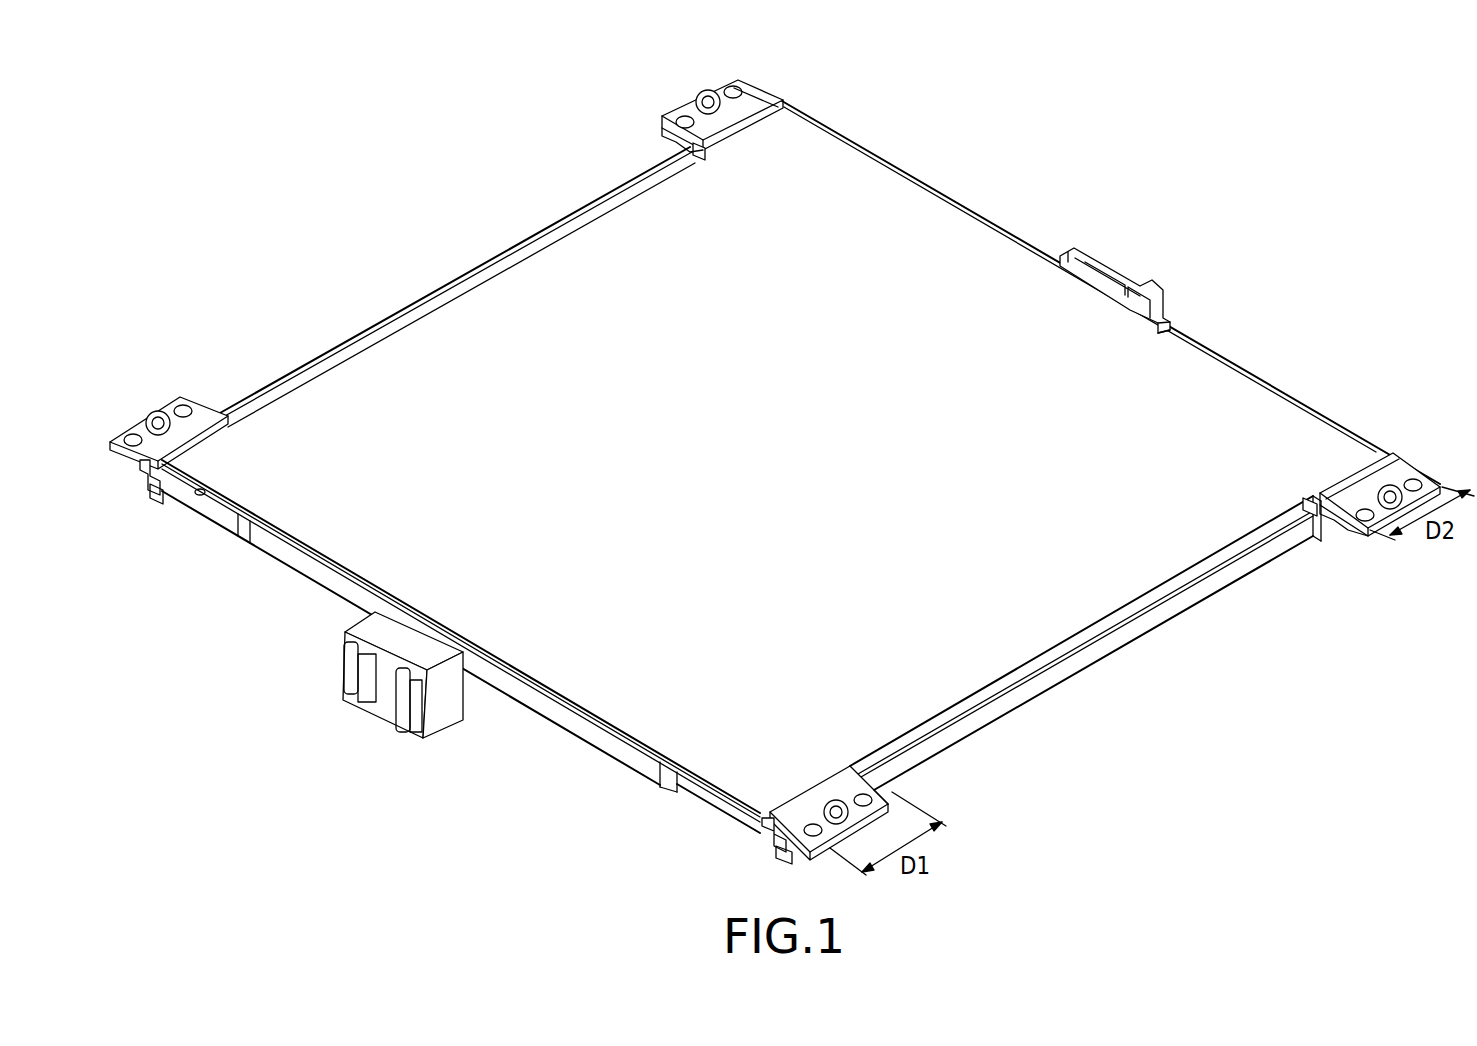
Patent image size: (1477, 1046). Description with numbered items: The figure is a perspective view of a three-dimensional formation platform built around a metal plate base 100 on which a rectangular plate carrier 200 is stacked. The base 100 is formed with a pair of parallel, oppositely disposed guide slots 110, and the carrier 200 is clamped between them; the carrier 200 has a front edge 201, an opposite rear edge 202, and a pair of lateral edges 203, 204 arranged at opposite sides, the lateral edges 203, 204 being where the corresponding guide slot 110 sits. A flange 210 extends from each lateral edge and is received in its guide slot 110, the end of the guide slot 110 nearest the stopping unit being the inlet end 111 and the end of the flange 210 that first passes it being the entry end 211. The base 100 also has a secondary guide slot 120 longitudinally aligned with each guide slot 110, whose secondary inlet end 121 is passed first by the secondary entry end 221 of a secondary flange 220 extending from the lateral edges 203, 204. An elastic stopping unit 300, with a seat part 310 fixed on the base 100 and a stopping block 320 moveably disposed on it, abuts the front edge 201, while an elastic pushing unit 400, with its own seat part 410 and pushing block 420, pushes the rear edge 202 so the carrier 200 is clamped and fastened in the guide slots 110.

The base 100 is at (1100, 666).
The guide slot 110 is at (217, 386).
The inlet end 111 is at (898, 772).
The secondary guide slot 120 is at (782, 89).
The secondary inlet end 121 is at (790, 103).
The carrier 200 is at (940, 215).
The front edge 201 is at (1292, 396).
The rear edge 202 is at (232, 525).
The lateral edge 203 is at (470, 288).
The lateral edge 204 is at (1002, 683).
The flange 210 is at (140, 484).
The entry end 211 is at (154, 500).
The secondary flange 220 is at (680, 148).
The secondary entry end 221 is at (662, 122).
The elastic stopping unit 300 is at (1171, 281).
The seat part 310 is at (1175, 326).
The stopping block 320 is at (1150, 302).
The elastic pushing unit 400 is at (360, 718).
The seat part 410 is at (440, 722).
The pushing block 420 is at (480, 692).